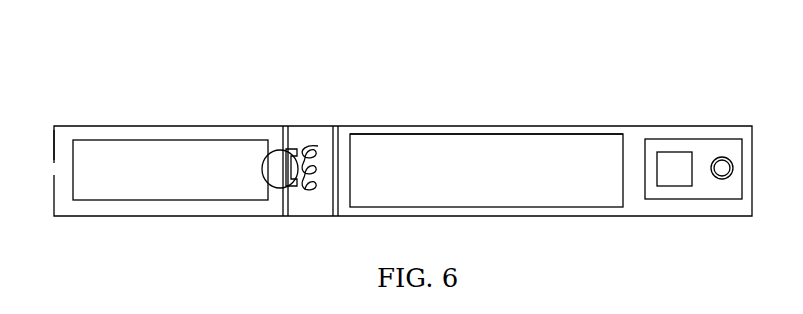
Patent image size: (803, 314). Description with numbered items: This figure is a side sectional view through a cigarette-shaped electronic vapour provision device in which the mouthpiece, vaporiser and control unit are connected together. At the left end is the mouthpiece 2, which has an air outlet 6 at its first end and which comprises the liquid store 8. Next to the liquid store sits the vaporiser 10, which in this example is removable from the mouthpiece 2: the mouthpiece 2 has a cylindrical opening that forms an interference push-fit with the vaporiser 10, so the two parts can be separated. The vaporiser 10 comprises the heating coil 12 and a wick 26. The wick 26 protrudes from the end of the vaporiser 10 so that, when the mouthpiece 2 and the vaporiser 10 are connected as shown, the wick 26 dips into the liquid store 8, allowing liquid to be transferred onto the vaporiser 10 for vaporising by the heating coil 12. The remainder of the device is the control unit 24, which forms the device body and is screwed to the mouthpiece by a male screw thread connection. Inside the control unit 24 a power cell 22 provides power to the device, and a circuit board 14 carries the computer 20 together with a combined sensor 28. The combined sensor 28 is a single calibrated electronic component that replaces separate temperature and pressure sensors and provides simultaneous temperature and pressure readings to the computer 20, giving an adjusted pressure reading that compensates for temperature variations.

The mouthpiece 2 is at (210, 132).
The air outlet 6 is at (51, 173).
The liquid store 8 is at (143, 159).
The vaporiser 10 is at (300, 140).
The heating coil 12 is at (315, 192).
The circuit board 14 is at (735, 145).
The computer 20 is at (665, 163).
The power cell 22 is at (487, 157).
The control unit 24 is at (567, 130).
The wick 26 is at (273, 178).
The combined sensor 28 is at (717, 162).